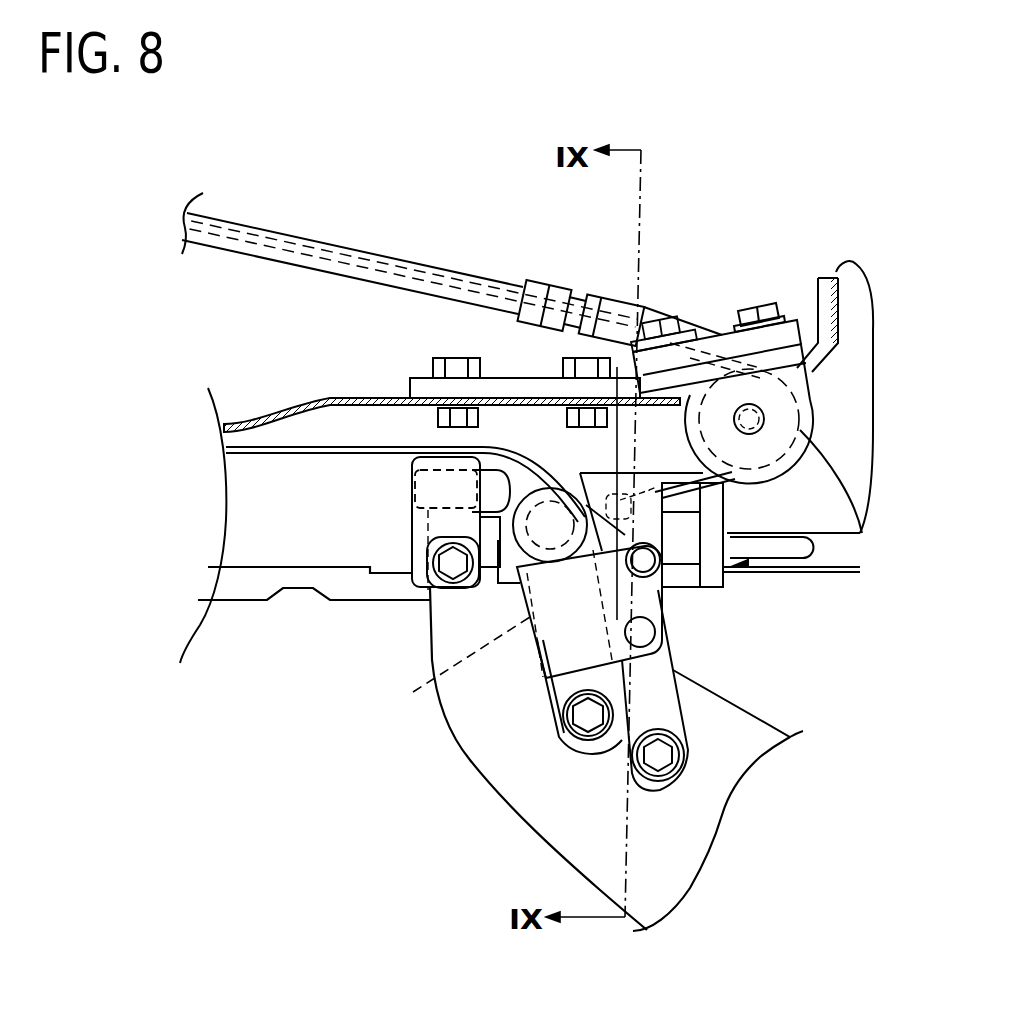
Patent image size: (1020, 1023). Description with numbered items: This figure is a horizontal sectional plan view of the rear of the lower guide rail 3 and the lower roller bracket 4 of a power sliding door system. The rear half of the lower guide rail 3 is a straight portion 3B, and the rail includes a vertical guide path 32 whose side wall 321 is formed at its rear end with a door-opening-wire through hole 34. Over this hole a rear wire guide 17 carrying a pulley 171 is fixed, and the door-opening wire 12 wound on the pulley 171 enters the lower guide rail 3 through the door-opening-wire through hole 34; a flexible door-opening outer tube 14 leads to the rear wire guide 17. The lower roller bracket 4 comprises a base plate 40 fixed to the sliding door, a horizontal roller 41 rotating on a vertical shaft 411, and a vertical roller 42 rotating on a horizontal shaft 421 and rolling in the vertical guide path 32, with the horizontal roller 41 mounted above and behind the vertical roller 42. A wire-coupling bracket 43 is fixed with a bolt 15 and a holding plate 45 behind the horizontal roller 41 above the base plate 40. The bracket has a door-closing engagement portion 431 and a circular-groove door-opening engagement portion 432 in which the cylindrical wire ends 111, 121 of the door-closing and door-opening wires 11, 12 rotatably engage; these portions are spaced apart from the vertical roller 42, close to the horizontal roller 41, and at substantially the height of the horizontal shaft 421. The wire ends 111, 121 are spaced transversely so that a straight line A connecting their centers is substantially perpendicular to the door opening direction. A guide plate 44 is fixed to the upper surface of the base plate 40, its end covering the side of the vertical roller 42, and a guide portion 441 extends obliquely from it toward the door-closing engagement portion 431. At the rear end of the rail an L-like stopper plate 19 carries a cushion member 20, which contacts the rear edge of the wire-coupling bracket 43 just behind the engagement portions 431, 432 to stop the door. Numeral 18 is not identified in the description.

The lower guide rail 3 is at (337, 578).
The straight portion 3B is at (227, 568).
The lower roller bracket 4 is at (512, 810).
The door-closing wire 11 is at (363, 445).
The door-opening wire 12 is at (750, 484).
The door-opening outer tube 14 is at (365, 252).
The bolt 15 is at (673, 783).
The rear wire guide 17 is at (792, 316).
The pulley 171 is at (862, 533).
The bolt 18 is at (428, 552).
The stopper plate 19 is at (788, 546).
The cushion member 20 is at (682, 568).
The vertical guide path 32 is at (309, 478).
The side wall 321 is at (258, 417).
The door-opening-wire through hole 34 is at (704, 385).
The base plate 40 is at (445, 722).
The horizontal roller 41 is at (520, 546).
The vertical shaft 411 is at (447, 666).
The vertical roller 42 is at (428, 468).
The horizontal shaft 421 is at (418, 490).
The wire-coupling bracket 43 is at (665, 532).
The guide plate 44 is at (411, 524).
The guide portion 441 is at (512, 470).
The holding plate 45 is at (553, 675).
The wire end 111 is at (722, 615).
The wire end 121 is at (645, 378).
The door-closing engagement portion 431 is at (660, 592).
The door-opening engagement portion 432 is at (590, 495).
The straight line A is at (604, 596).